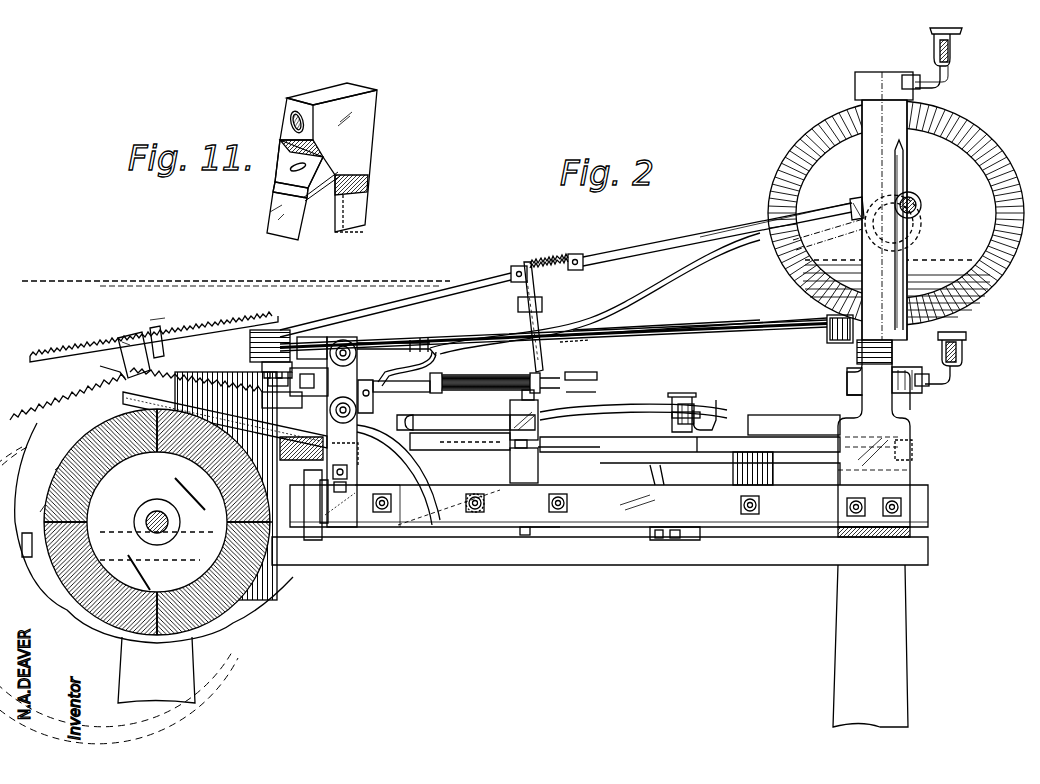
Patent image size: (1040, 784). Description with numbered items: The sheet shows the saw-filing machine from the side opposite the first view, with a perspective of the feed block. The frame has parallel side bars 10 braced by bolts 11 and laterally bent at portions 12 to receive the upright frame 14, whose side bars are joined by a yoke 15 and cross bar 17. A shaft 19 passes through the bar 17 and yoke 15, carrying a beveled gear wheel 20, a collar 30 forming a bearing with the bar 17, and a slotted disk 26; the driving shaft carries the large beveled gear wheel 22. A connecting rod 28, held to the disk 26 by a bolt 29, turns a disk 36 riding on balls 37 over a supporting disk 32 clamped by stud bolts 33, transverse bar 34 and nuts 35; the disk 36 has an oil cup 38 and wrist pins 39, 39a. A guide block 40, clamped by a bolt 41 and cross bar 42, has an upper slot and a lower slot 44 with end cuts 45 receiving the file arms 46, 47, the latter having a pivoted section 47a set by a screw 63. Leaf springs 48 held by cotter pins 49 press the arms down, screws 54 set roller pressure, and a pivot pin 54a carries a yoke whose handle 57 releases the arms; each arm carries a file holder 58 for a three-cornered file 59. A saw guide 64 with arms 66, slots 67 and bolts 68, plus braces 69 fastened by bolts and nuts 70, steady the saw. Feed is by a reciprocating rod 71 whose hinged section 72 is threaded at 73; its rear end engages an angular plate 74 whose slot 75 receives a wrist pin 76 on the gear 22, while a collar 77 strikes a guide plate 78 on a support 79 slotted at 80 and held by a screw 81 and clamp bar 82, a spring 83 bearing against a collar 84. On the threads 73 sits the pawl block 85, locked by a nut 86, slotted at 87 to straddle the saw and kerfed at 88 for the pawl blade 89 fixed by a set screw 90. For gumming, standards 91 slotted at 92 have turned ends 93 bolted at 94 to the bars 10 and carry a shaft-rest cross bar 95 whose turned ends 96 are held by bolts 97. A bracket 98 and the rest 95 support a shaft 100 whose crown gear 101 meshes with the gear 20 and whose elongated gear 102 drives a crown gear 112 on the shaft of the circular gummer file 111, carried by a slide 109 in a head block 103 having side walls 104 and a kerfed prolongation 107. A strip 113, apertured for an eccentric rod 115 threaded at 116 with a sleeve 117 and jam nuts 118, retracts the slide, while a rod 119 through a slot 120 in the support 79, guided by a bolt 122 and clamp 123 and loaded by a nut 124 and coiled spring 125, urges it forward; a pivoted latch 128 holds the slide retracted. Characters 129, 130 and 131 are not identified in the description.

In FIG. 2, the side bars 10 is at (446, 534).
In FIG. 2, the bolts 11 is at (556, 456).
In FIG. 2, the laterally bent portion 12 is at (800, 532).
In FIG. 2, the vertically disposed frame 14 is at (912, 482).
In FIG. 2, the yoke 15 is at (866, 70).
In FIG. 2, the cross bar 17 is at (848, 384).
In FIG. 2, the shaft 19 is at (905, 248).
In FIG. 2, the beveled gear wheel 20 is at (852, 346).
In FIG. 2, the beveled gear wheel 22 is at (800, 305).
In FIG. 2, the fly wheel or disk 26 is at (797, 416).
In FIG. 2, the connecting rod 28 is at (726, 440).
In FIG. 2, the bolt 29 is at (918, 452).
In FIG. 2, the collar 30 is at (938, 372).
In FIG. 2, the supporting disk 32 is at (590, 486).
In FIG. 2, the stud bolts 33 is at (676, 540).
In FIG. 2, the transverse bar 34 is at (704, 538).
In FIG. 2, the nuts 35 is at (660, 540).
In FIG. 2, the disk 36 is at (698, 480).
In FIG. 2, the anti-friction balls 37 is at (637, 507).
In FIG. 2, the oil cup 38 is at (658, 384).
In FIG. 2, the wrist pin 39 is at (696, 392).
In FIG. 2, the wrist pin 39a is at (680, 404).
In FIG. 2, the block 40 is at (508, 460).
In FIG. 2, the bolt 41 is at (530, 536).
In FIG. 2, the cross bar 42 is at (548, 536).
In FIG. 2, the guide slot 44 is at (500, 454).
In FIG. 2, the slot 45 is at (569, 445).
In FIG. 2, the file carrying arm 46 is at (470, 430).
In FIG. 2, the file carrying arm 47 is at (492, 418).
In FIG. 2, the section of file arm 47a is at (430, 448).
In FIG. 2, the curved leaf springs 48 is at (644, 420).
In FIG. 2, the cotter pins 49 is at (716, 404).
In FIG. 2, the adjusting screw 54 is at (540, 412).
In FIG. 2, the pivot pin 54a is at (534, 392).
In FIG. 2, the arm or handle 57 is at (530, 440).
In FIG. 2, the file holder 58 is at (392, 418).
In FIG. 2, the file 59 is at (249, 486).
In FIG. 2, the bolt or screw 63 is at (422, 430).
In FIG. 2, the saw guide 64 is at (322, 516).
In FIG. 2, the arms 66 is at (396, 503).
In FIG. 2, the slots 67 is at (486, 500).
In FIG. 2, the bolts 68 is at (478, 512).
In FIG. 2, the supporting arms or braces 69 is at (340, 498).
In FIG. 2, the bolt and nut 70 is at (392, 522).
In FIG. 2, the reciprocating rod 71 is at (498, 272).
In FIG. 2, the rod section 72 is at (344, 282).
In FIG. 2, the screw-threaded portion 73 is at (238, 322).
In FIG. 2, the angular plate 74 is at (855, 200).
In FIG. 2, the slot 75 is at (921, 198).
In FIG. 2, the wrist pin 76 is at (912, 192).
In FIG. 2, the collar 77 is at (521, 264).
In FIG. 2, the guide plate 78 is at (520, 270).
In FIG. 2, the support 79 is at (575, 320).
In FIG. 2, the slot 80 is at (535, 348).
In FIG. 2, the screw 81 is at (543, 298).
In FIG. 2, the clamp bar 82 is at (500, 316).
In FIG. 2, the spring 83 is at (552, 258).
In FIG. 2, the collar 84 is at (586, 254).
In FIG. 11, the adjustable block 85 is at (316, 226).
In FIG. 2, the adjustable block 85 is at (138, 338).
In FIG. 2, the lock nut 86 is at (160, 332).
In FIG. 11, the slot 87 is at (366, 218).
In FIG. 11, the kerf 88 is at (331, 175).
In FIG. 2, the kerf 88 is at (103, 371).
In FIG. 11, the blade 89 is at (280, 232).
In FIG. 2, the blade 89 is at (124, 380).
In FIG. 2, the set screw 90 is at (122, 350).
In FIG. 2, the upright standards 91 is at (328, 392).
In FIG. 2, the slot 92 is at (350, 376).
In FIG. 2, the upturned lower end 93 is at (350, 520).
In FIG. 2, the bolt 94 is at (345, 461).
In FIG. 2, the cross bar 95 is at (326, 344).
In FIG. 2, the rearwardly turned ends 96 is at (357, 340).
In FIG. 2, the bolts 97 is at (358, 340).
In FIG. 2, the supporting bracket 98 is at (826, 335).
In FIG. 2, the shaft 100 is at (706, 302).
In FIG. 2, the crown gear wheel 101 is at (856, 348).
In FIG. 2, the toothed gear wheel 102 is at (274, 326).
In FIG. 2, the head block 103 is at (396, 381).
In FIG. 2, the side walls 104 is at (282, 403).
In FIG. 2, the forward prolongation 107 is at (268, 406).
In FIG. 2, the file carrying slide 109 is at (274, 381).
In FIG. 2, the rotatable file 111 is at (206, 376).
In FIG. 2, the crown gear 112 is at (262, 360).
In FIG. 2, the strip 113 is at (410, 351).
In FIG. 2, the eccentric rod 115 is at (712, 264).
In FIG. 2, the screw-threaded end 116 is at (410, 338).
In FIG. 2, the loose sleeve 117 is at (509, 369).
In FIG. 2, the jam nuts 118 is at (396, 344).
In FIG. 2, the rod 119 is at (598, 376).
In FIG. 2, the slot 120 is at (693, 338).
In FIG. 2, the bolt 122 is at (586, 393).
In FIG. 2, the clamp 123 is at (575, 342).
In FIG. 2, the adjustable nut 124 is at (445, 376).
In FIG. 2, the coiled spring 125 is at (478, 394).
In FIG. 2, the pivoted latch 128 is at (366, 393).
In FIG. 2, the groove 129 is at (924, 220).
In FIG. 2, the line 130 is at (832, 234).
In FIG. 2, the oil cup 131 is at (958, 56).